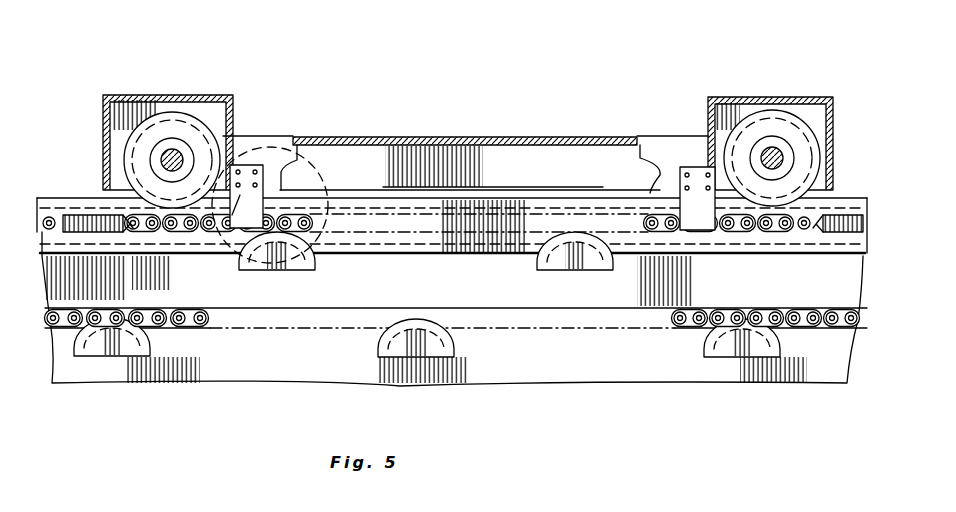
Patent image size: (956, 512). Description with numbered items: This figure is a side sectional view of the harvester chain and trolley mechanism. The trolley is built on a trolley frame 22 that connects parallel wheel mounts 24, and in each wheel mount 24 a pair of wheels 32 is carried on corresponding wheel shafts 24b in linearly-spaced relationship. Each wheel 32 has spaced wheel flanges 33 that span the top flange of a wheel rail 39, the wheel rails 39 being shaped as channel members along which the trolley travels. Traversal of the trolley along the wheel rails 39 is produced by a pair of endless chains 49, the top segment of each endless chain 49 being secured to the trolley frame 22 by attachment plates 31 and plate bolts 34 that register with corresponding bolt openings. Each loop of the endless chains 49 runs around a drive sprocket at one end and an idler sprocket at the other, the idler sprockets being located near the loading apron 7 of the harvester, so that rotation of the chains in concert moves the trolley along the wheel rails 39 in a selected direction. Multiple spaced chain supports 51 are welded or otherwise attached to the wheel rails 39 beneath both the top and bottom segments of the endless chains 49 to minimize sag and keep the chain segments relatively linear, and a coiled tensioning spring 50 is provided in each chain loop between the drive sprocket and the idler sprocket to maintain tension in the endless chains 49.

The loading apron 7 is at (313, 167).
The trolley frame 22 is at (540, 136).
The wheel mount 24 is at (300, 130).
The wheel shaft 24b is at (172, 157).
The attachment plate 31 is at (247, 193).
The wheel 32 is at (126, 148).
The wheel flange 33 is at (138, 144).
The plate bolt 34 is at (257, 164).
The wheel rail 39 is at (75, 192).
The endless chain 49 is at (757, 236).
The coiled tensioning spring 50 is at (843, 234).
The chain support 51 is at (315, 265).